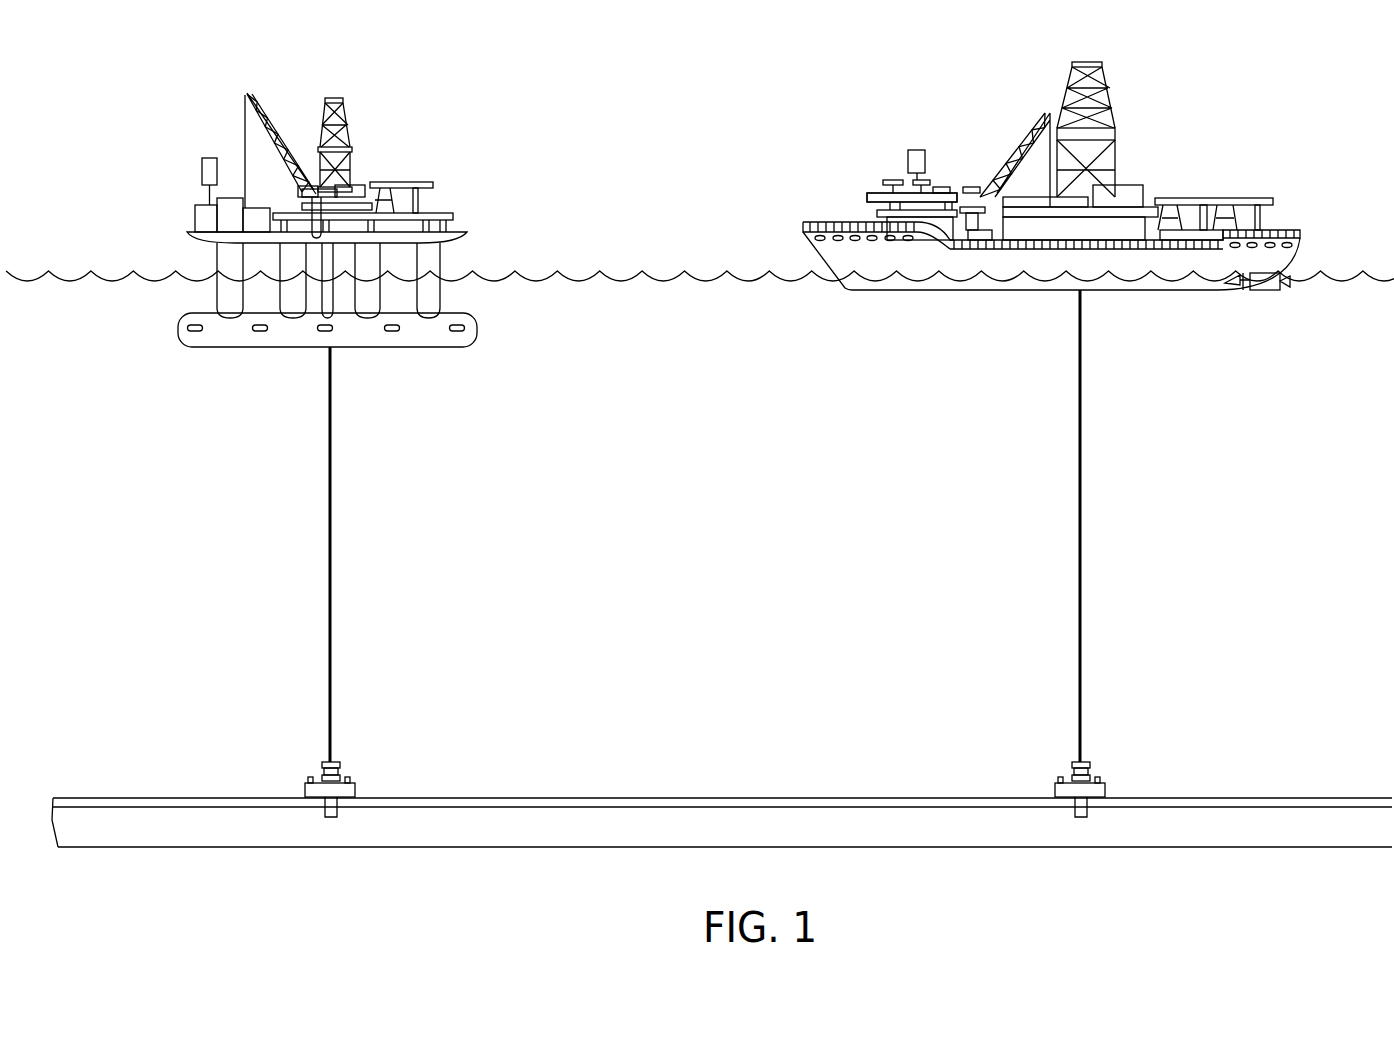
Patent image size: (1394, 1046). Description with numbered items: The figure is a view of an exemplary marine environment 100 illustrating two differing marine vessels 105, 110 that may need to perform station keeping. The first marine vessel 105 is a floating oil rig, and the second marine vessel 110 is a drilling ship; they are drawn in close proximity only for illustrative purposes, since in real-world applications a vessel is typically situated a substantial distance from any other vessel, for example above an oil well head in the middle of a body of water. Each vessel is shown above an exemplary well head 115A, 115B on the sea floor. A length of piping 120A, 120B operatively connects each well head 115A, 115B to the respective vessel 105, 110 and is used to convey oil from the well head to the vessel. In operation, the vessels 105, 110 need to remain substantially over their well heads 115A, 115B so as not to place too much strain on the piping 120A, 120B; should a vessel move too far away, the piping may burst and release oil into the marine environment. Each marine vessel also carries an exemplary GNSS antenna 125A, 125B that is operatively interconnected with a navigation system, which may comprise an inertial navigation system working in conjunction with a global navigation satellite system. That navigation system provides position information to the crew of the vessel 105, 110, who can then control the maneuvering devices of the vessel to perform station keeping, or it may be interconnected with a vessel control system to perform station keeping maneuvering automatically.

The marine environment 100 is at (1267, 103).
The first marine vessel 105 is at (442, 253).
The second marine vessel 110 is at (813, 253).
The well head 115A is at (357, 780).
The well head 115B is at (1105, 780).
The length of piping 120A is at (332, 662).
The length of piping 120B is at (1082, 662).
The GNSS antenna 125A is at (207, 157).
The GNSS antenna 125B is at (925, 150).